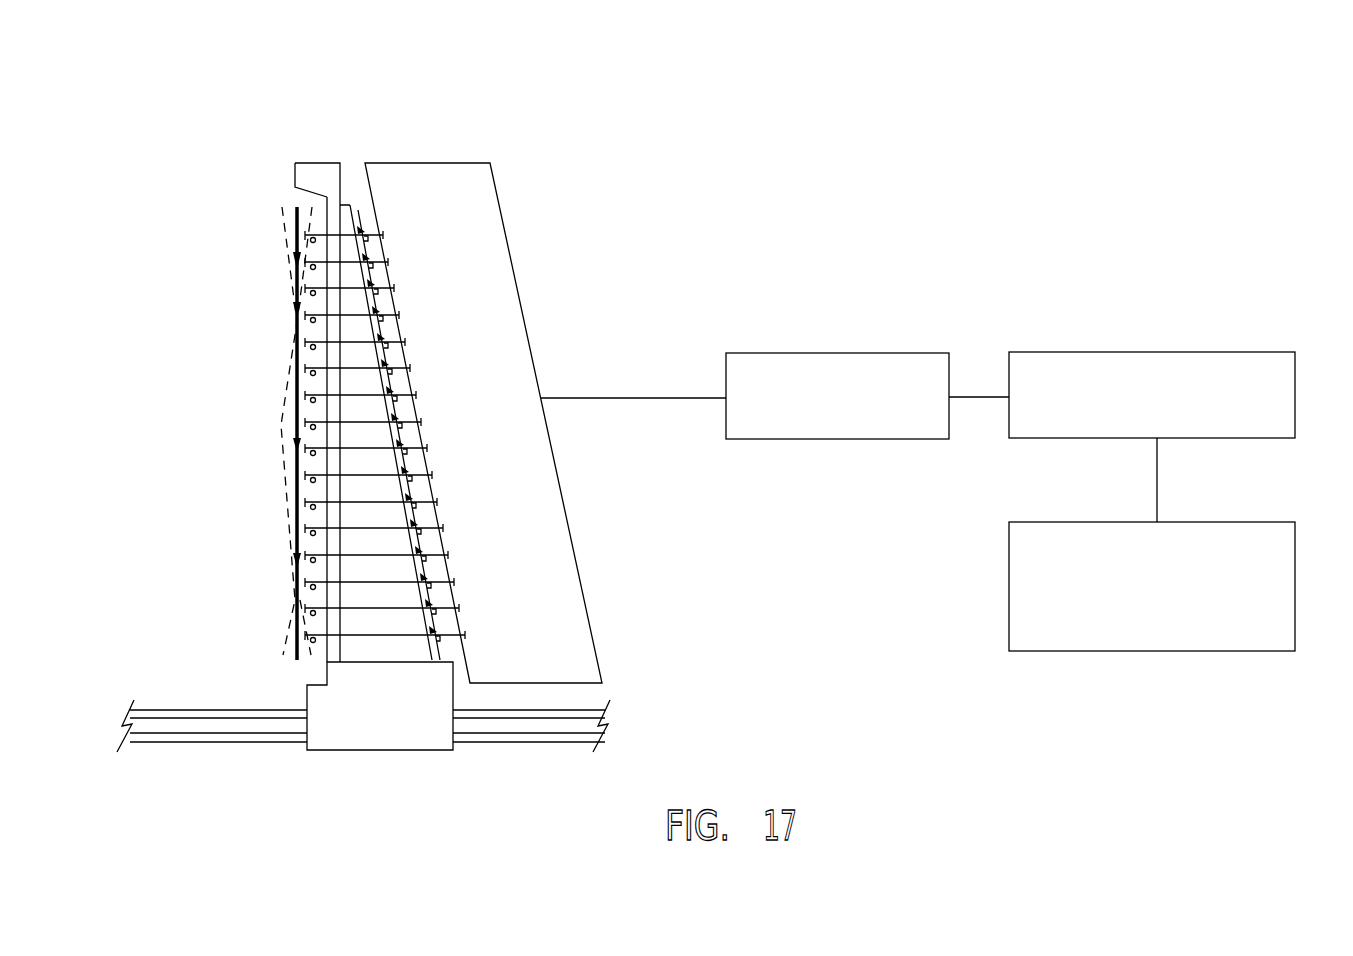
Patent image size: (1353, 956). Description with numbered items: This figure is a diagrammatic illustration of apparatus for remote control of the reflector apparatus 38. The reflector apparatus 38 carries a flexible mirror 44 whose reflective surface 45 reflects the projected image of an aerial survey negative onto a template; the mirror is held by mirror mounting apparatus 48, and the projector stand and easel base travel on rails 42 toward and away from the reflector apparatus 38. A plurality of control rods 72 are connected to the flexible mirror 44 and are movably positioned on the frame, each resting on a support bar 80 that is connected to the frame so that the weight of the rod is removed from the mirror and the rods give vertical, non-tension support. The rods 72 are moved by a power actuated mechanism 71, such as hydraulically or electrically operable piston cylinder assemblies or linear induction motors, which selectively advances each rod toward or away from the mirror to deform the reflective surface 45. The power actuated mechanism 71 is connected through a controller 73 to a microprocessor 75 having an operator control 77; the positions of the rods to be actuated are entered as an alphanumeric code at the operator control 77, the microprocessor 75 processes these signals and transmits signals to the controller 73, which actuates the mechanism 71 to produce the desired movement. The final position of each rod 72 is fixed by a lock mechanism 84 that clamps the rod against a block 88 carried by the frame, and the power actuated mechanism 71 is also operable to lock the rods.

The reflector apparatus 38 is at (232, 214).
The rails 42 is at (192, 742).
The flexible mirror 44 is at (292, 625).
The reflective surface 45 is at (293, 480).
The mirror mounting apparatus 48 is at (315, 148).
The power actuated mechanism 71 is at (498, 185).
The control rods 72 is at (366, 210).
The controller 73 is at (817, 353).
The microprocessor 75 is at (1122, 352).
The operator control 77 is at (1167, 651).
The support bar 80 is at (295, 250).
The lock mechanism 84 is at (378, 312).
The block 88 is at (380, 325).